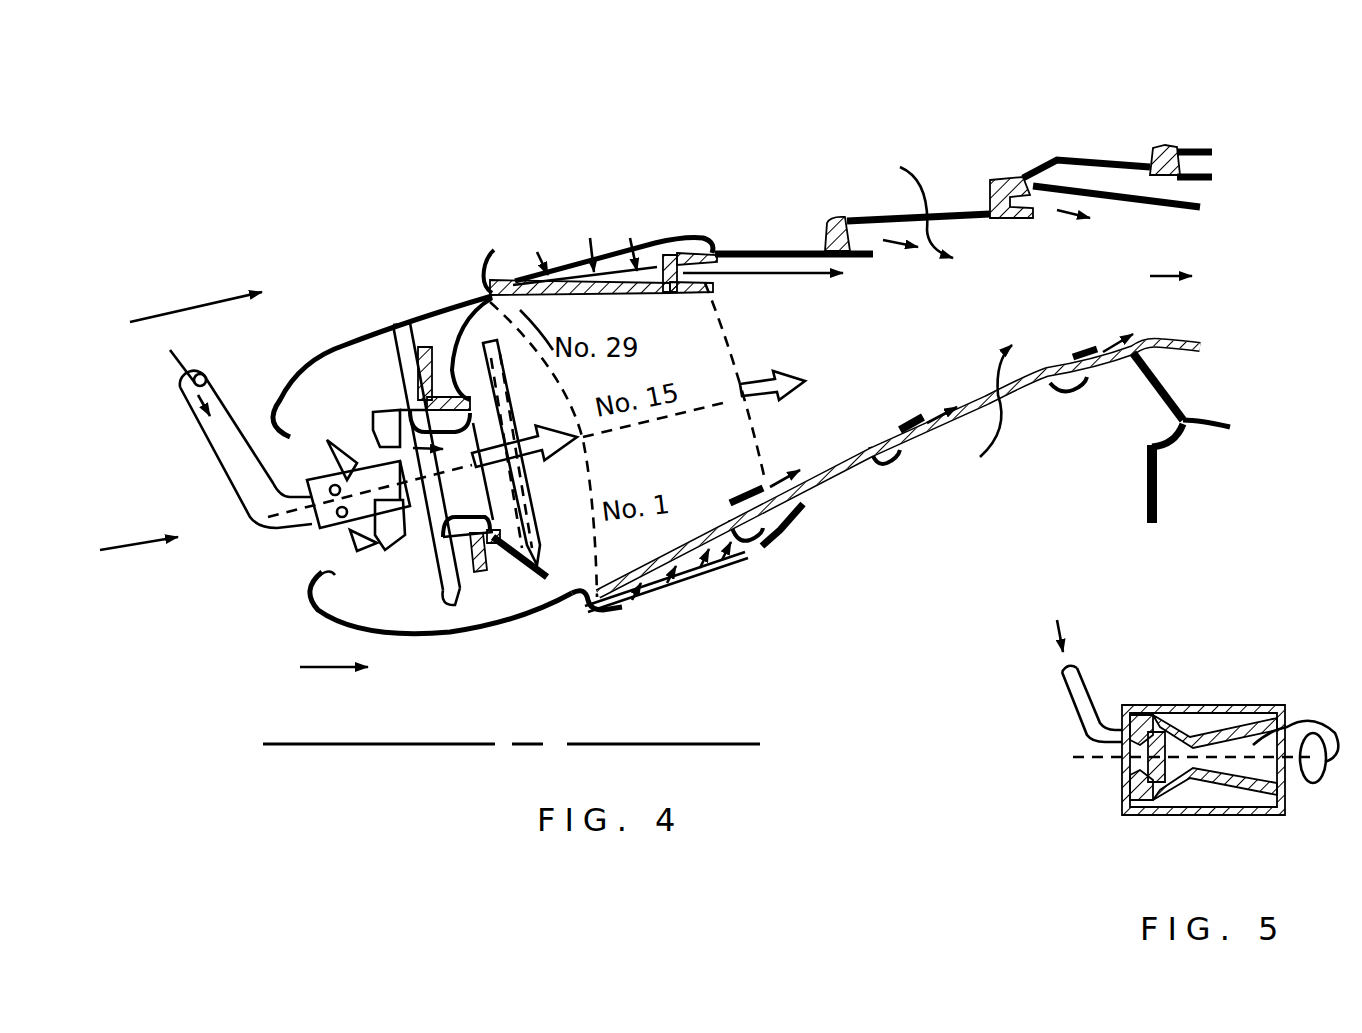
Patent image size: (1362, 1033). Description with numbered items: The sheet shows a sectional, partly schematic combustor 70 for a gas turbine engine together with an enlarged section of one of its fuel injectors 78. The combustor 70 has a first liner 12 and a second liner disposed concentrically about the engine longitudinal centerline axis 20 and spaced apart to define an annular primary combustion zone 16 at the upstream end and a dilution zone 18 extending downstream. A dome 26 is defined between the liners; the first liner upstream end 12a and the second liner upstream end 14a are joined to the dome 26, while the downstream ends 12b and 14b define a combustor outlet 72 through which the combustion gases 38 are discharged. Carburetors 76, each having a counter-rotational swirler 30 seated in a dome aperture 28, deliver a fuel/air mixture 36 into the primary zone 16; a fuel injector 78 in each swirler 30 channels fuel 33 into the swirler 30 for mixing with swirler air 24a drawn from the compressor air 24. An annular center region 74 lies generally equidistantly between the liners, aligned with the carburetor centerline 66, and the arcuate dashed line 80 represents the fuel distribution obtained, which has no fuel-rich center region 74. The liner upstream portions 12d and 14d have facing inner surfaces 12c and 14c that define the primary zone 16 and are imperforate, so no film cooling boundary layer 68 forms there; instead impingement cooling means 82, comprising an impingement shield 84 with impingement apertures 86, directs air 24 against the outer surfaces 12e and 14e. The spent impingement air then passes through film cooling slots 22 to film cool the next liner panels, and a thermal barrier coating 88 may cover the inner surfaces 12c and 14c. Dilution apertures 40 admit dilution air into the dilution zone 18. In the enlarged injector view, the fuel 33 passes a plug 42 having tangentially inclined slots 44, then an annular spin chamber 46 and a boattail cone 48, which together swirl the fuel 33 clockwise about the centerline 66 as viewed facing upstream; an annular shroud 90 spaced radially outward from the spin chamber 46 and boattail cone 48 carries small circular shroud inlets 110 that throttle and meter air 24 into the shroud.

In FIG. 4, the first combustor liner 12 is at (848, 216).
In FIG. 4, the upstream end of first liner 12a is at (492, 293).
In FIG. 4, the downstream end of first liner 12b is at (1176, 145).
In FIG. 4, the inner surface of first liner 12c is at (583, 296).
In FIG. 4, the upstream portion of first liner 12d is at (668, 255).
In FIG. 4, the outer surface of first liner upstream portion 12e is at (612, 278).
In FIG. 4, the upstream end of second liner 14a is at (585, 608).
In FIG. 4, the downstream end of second liner 14b is at (1177, 352).
In FIG. 4, the inner surface of second liner 14c is at (677, 540).
In FIG. 4, the upstream portion of second liner 14d is at (703, 567).
In FIG. 4, the outer surface of second liner upstream portion 14e is at (660, 580).
In FIG. 4, the primary combustion zone 16 is at (677, 453).
In FIG. 4, the dilution zone 18 is at (972, 331).
In FIG. 4, the engine longitudinal centerline axis 20 is at (330, 744).
In FIG. 4, the film cooling slot 22 is at (773, 545).
In FIG. 4, the compressor air 24 is at (178, 305).
In FIG. 4, the swirler air 24a is at (393, 345).
In FIG. 4, the dome 26 is at (437, 330).
In FIG. 4, the dome aperture 28 is at (495, 527).
In FIG. 4, the counter-rotational swirler 30 is at (395, 350).
In FIG. 4, the fuel 33 is at (178, 373).
In FIG. 5, the fuel 33 is at (1066, 628).
In FIG. 4, the fuel/air mixture 36 is at (532, 448).
In FIG. 4, the combustion gases 38 is at (1150, 276).
In FIG. 4, the dilution aperture 40 is at (947, 205).
In FIG. 5, the plug 42 is at (1120, 757).
In FIG. 5, the tangentially inclined slots 44 is at (1123, 760).
In FIG. 5, the annular spin chamber 46 is at (1178, 762).
In FIG. 5, the boattail cone 48 is at (1240, 772).
In FIG. 4, the axial centerline 66 is at (250, 530).
In FIG. 5, the axial centerline 66 is at (1295, 760).
In FIG. 4, the film cooling boundary layer 68 is at (807, 274).
In FIG. 4, the combustor 70 is at (771, 248).
In FIG. 4, the combustor outlet 72 is at (1197, 256).
In FIG. 4, the annular center region 74 is at (712, 398).
In FIG. 4, the carburetor 76 is at (368, 386).
In FIG. 4, the fuel injector 78 is at (322, 537).
In FIG. 5, the fuel injector 78 is at (1116, 811).
In FIG. 4, the fuel distribution 80 is at (592, 488).
In FIG. 4, the impingement cooling means 82 is at (708, 236).
In FIG. 4, the impingement shield 84 is at (588, 268).
In FIG. 4, the impingement aperture 86 is at (547, 268).
In FIG. 4, the thermal barrier coating 88 is at (662, 292).
In FIG. 5, the annular shroud 90 is at (1175, 686).
In FIG. 4, the circular shroud inlets 110 is at (341, 518).